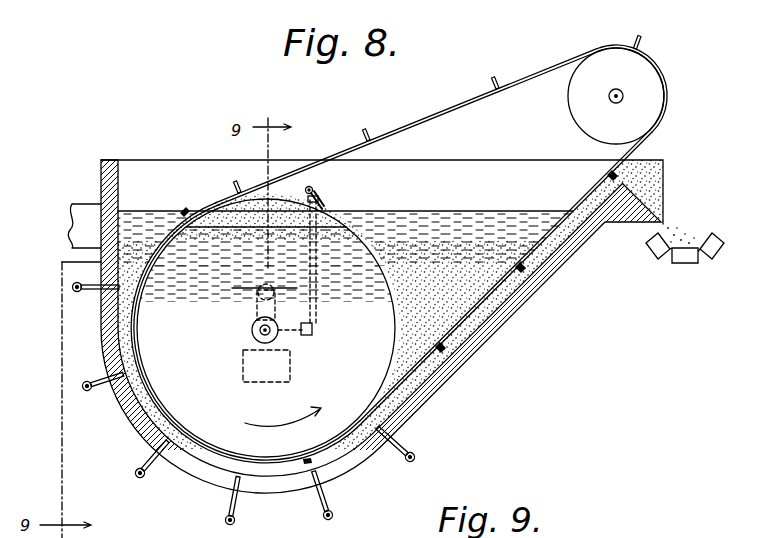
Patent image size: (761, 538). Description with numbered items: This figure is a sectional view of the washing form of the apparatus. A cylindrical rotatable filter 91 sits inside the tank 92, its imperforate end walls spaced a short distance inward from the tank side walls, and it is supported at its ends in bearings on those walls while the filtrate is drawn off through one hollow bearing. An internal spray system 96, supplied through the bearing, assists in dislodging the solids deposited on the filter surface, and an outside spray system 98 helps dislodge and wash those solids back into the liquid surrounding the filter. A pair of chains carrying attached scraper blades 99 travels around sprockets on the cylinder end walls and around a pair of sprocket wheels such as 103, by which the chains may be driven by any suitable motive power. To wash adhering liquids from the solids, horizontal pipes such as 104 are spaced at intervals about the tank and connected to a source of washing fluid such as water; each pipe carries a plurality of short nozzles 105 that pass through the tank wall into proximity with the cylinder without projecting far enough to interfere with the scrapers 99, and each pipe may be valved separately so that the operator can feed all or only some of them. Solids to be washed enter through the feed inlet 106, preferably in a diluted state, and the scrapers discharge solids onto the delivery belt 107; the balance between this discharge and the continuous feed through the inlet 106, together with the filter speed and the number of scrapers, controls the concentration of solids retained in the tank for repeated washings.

The cylindrical rotatable filter 91 is at (393, 347).
The tank 92 is at (118, 176).
The internal spray system 96 is at (308, 216).
The outside spray system 98 is at (313, 191).
The scraper blades 99 is at (491, 84).
The sprocket wheels 103 is at (578, 111).
The pipes 104 is at (72, 288).
The short nozzles 105 is at (92, 291).
The feed inlet 106 is at (69, 224).
The delivery belt 107 is at (705, 236).